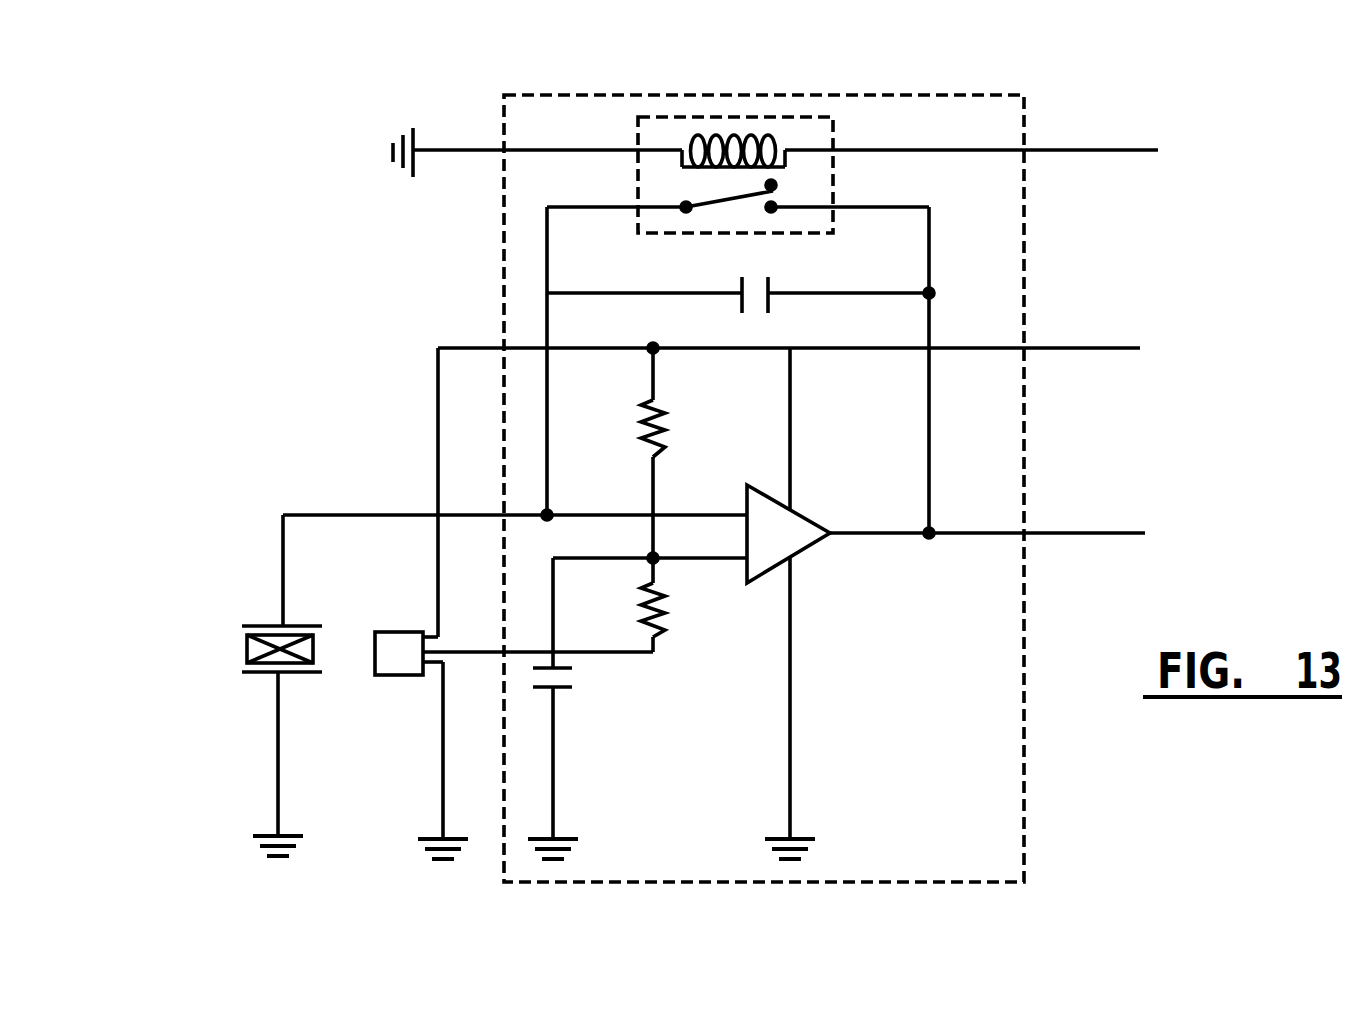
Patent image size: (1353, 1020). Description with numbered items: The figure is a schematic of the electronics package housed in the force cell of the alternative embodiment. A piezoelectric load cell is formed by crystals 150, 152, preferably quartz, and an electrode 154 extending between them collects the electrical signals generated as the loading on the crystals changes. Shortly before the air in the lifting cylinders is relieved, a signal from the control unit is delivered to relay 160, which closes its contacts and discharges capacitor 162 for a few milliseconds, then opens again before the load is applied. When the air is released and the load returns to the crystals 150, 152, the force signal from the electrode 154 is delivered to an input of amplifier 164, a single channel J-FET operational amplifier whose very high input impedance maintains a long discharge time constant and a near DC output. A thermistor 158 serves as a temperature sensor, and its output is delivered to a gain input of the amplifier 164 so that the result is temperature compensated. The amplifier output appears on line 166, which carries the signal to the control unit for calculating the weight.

The crystal 150 is at (1022, 825).
The crystal 152 is at (314, 650).
The electrode 154 is at (285, 668).
The thermistor 158 is at (402, 631).
The relay 160 is at (838, 122).
The capacitor 162 is at (740, 308).
The amplifier 164 is at (801, 514).
The line 166 is at (1053, 533).